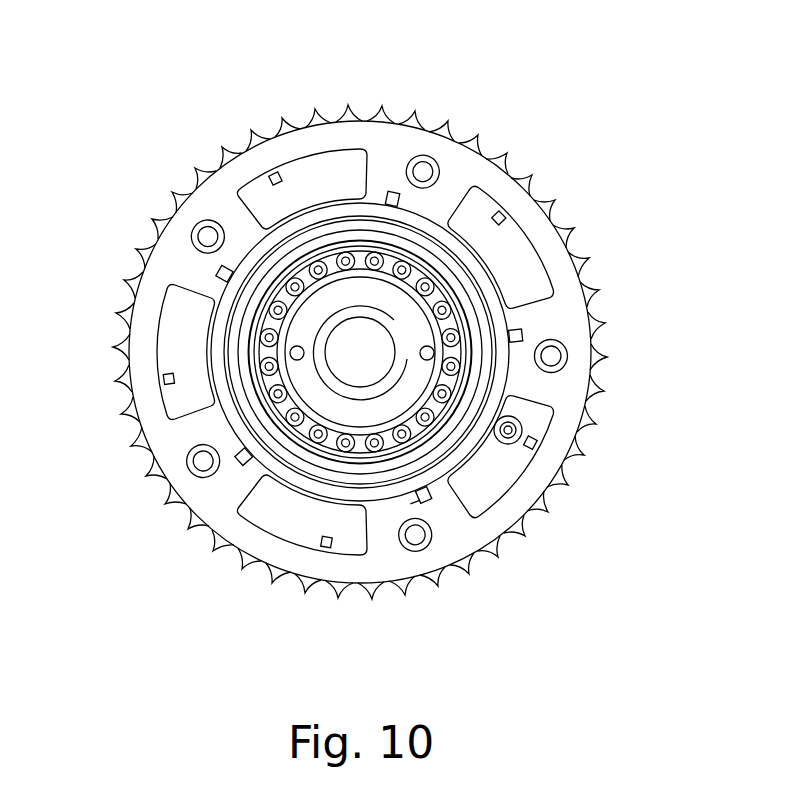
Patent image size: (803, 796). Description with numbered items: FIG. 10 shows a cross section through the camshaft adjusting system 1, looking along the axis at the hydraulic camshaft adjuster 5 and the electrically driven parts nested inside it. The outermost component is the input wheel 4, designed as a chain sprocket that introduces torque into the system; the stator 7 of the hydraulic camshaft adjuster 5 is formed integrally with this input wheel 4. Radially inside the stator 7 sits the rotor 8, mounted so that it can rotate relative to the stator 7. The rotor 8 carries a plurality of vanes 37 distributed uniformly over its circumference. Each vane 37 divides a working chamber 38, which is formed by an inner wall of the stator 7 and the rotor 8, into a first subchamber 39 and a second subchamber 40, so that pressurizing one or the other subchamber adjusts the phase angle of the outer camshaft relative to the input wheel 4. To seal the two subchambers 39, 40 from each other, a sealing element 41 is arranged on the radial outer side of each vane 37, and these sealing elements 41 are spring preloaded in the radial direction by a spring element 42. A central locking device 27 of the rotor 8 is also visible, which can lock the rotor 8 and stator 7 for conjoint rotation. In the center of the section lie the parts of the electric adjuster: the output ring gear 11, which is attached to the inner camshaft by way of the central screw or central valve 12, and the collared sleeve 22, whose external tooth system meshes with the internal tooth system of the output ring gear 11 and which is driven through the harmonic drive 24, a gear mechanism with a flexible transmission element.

The camshaft adjusting system 1 is at (668, 186).
The input wheel 4 is at (393, 124).
The hydraulic camshaft adjuster 5 is at (499, 582).
The stator 7 is at (453, 183).
The rotor 8 is at (463, 253).
The output ring gear 11 is at (255, 280).
The central screw/central valve 12 is at (360, 353).
The collared sleeve 22 is at (248, 330).
The harmonic drive 24 is at (418, 320).
The central locking device 27 is at (512, 428).
The vanes 37 is at (293, 193).
The working chamber 38 is at (290, 338).
The first subchamber 39 is at (333, 180).
The second subchamber 40 is at (246, 200).
The sealing element 41 is at (268, 180).
The spring element 42 is at (258, 198).